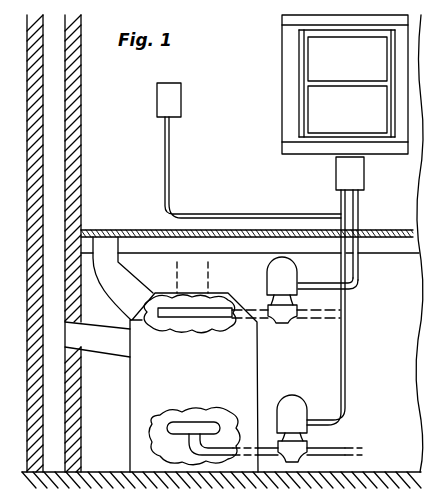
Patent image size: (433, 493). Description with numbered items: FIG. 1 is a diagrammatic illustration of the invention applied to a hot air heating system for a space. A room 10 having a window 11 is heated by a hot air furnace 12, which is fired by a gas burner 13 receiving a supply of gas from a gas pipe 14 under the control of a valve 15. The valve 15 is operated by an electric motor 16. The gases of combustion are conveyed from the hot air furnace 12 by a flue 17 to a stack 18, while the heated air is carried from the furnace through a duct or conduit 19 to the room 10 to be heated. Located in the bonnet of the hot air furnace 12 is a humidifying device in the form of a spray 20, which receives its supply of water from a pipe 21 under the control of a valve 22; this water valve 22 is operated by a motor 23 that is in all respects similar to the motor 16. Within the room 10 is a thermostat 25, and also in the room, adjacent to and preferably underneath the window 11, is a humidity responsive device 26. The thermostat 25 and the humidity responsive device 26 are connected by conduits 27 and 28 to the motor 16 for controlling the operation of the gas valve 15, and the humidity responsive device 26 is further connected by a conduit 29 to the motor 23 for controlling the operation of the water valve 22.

The room 10 is at (237, 136).
The window 11 is at (351, 71).
The hot air furnace 12 is at (248, 381).
The gas burner 13 is at (210, 427).
The gas pipe 14 is at (327, 448).
The valve 15 is at (296, 448).
The electric motor 16 is at (296, 407).
The flue 17 is at (100, 348).
The stack 18 is at (62, 255).
The duct or conduit 19 is at (128, 292).
The spray 20 is at (183, 317).
The pipe 21 is at (311, 318).
The valve 22 is at (284, 323).
The motor 23 is at (272, 285).
The thermostat 25 is at (157, 99).
The humidity responsive device 26 is at (336, 173).
The conduit 27 is at (216, 215).
The conduit 28 is at (341, 203).
The conduit 29 is at (360, 272).